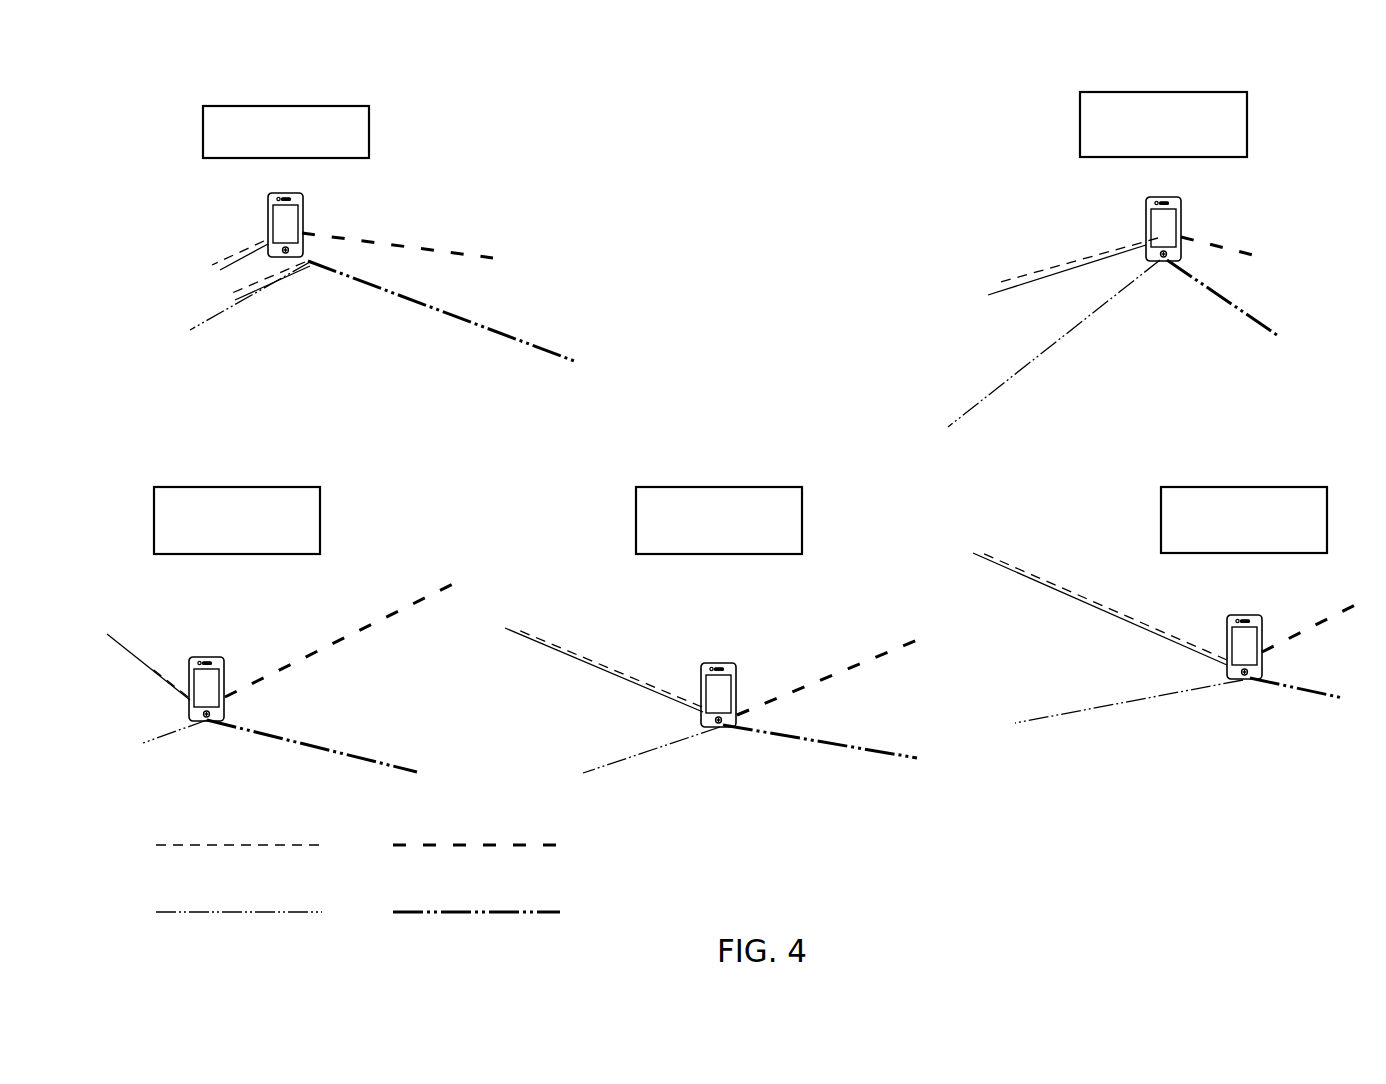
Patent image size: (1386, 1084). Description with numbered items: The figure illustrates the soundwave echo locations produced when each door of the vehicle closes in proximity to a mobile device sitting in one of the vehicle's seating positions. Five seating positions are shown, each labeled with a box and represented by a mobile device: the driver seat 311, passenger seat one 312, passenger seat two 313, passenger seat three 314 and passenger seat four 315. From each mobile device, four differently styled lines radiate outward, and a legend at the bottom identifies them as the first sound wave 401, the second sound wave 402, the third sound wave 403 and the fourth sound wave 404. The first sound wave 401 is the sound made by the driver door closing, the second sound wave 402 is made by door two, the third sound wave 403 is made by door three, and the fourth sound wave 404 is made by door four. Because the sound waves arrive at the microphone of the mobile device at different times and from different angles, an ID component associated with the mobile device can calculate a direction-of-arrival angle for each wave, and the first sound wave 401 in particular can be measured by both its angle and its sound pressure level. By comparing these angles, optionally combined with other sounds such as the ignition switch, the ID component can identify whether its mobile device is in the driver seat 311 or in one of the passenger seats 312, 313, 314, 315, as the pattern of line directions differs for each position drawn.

The driver seat 311 is at (283, 106).
The passenger seat one 312 is at (1158, 92).
The passenger seat two 313 is at (230, 487).
The passenger seat three 314 is at (713, 487).
The passenger seat four 315 is at (1238, 487).
The first sound wave 401 is at (262, 845).
The second sound wave 402 is at (262, 912).
The third sound wave 403 is at (500, 845).
The fourth sound wave 404 is at (500, 912).